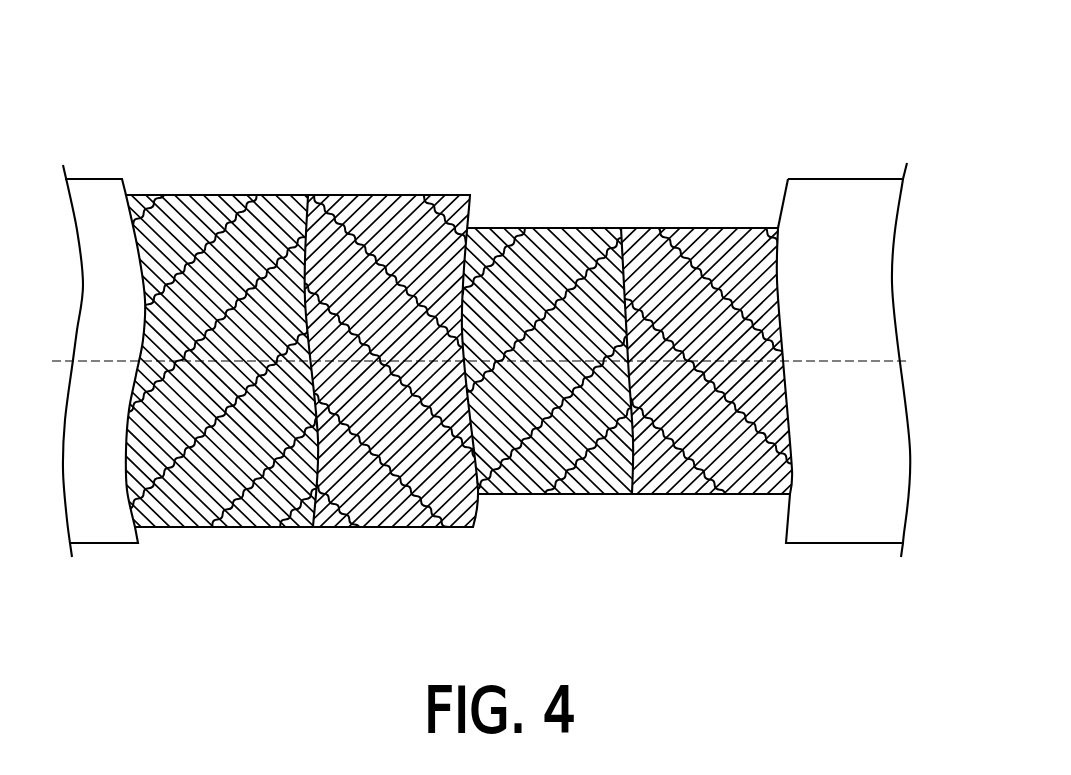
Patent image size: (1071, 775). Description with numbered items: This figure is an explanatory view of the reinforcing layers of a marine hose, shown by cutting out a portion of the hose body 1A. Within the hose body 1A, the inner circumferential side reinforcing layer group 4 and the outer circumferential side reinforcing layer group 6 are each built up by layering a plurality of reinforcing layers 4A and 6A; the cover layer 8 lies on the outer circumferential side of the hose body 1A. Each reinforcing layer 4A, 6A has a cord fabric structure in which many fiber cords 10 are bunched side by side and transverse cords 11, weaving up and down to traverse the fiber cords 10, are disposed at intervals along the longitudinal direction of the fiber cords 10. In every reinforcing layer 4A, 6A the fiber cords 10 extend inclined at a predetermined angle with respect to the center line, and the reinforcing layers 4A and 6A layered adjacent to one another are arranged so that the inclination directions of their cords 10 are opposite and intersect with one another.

The hose body 1A is at (813, 180).
The inner circumferential side reinforcing layer group 4 is at (520, 117).
The reinforcing layer 4A is at (560, 226).
The outer circumferential side reinforcing layer group 6 is at (177, 87).
The reinforcing layer 6A is at (218, 193).
The cover layer 8 is at (95, 186).
The fiber cord 10 is at (175, 503).
The transverse cord 11 is at (257, 483).